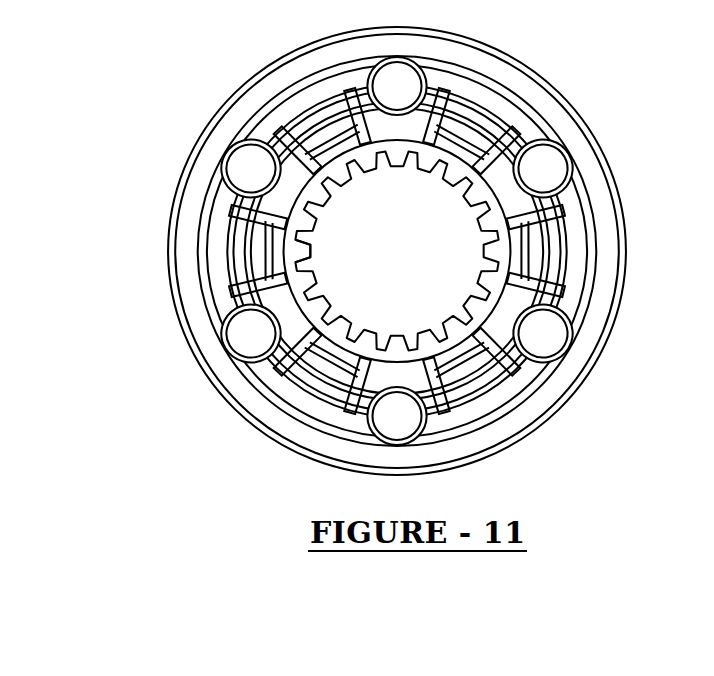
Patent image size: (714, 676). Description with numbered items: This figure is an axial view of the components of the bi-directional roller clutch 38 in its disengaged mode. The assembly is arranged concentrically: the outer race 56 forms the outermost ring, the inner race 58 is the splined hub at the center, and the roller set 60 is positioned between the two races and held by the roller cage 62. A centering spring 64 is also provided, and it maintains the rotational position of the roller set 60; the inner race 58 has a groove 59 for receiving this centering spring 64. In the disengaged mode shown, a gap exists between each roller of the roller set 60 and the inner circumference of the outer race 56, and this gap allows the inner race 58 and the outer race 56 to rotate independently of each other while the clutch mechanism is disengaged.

The bi-directional roller clutch 38 is at (285, 466).
The outer race 56 is at (303, 66).
The inner race 58 is at (327, 258).
The groove 59 is at (328, 258).
The roller set 60 is at (403, 80).
The roller cage 62 is at (562, 226).
The centering spring 64 is at (372, 385).